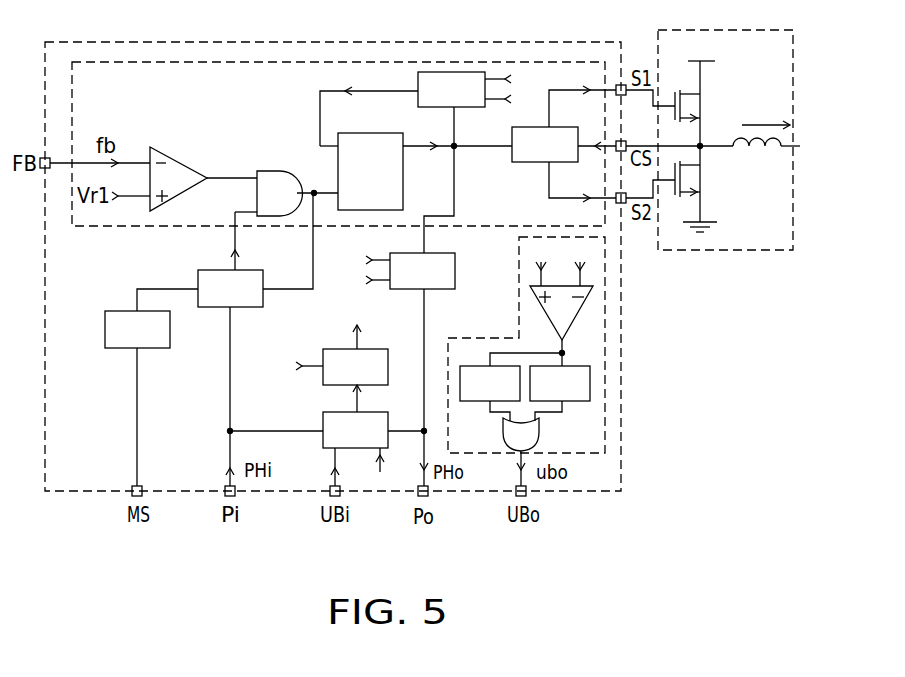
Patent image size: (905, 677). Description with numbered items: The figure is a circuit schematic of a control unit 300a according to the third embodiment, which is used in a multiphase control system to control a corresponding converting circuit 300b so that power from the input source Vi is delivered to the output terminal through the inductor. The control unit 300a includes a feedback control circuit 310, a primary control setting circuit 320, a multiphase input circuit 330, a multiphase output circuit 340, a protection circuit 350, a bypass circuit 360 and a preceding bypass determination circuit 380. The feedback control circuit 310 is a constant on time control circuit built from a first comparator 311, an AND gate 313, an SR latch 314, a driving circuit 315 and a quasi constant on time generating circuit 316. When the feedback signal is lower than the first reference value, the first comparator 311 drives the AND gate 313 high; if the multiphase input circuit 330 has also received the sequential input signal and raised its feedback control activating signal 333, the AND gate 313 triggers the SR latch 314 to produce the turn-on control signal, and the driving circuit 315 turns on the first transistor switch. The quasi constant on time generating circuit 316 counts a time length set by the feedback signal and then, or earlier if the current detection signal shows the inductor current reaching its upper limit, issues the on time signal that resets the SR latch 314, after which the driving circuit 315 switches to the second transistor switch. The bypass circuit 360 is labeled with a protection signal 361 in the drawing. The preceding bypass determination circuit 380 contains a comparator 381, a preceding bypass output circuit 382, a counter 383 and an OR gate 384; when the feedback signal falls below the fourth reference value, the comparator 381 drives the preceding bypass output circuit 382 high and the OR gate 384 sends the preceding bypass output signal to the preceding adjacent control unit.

The control unit 300a is at (58, 43).
The converting circuit 300b is at (760, 31).
The feedback control circuit 310 is at (92, 228).
The first comparator 311 is at (178, 164).
The AND gate 313 is at (271, 172).
The SR latch 314 is at (401, 167).
The driving circuit 315 is at (560, 155).
The quasi constant on time generating circuit 316 is at (466, 100).
The primary control setting circuit 320 is at (152, 339).
The multiphase input circuit 330 is at (245, 298).
The feedback control activating signal 333 is at (218, 241).
The multiphase output circuit 340 is at (437, 281).
The protection circuit 350 is at (370, 377).
The bypass circuit 360 is at (370, 440).
The protection signal 361 is at (340, 398).
The preceding bypass determination circuit 380 is at (520, 308).
The comparator 381 is at (540, 306).
The preceding bypass output circuit 382 is at (575, 394).
The counter 383 is at (505, 394).
The OR gate 384 is at (540, 438).